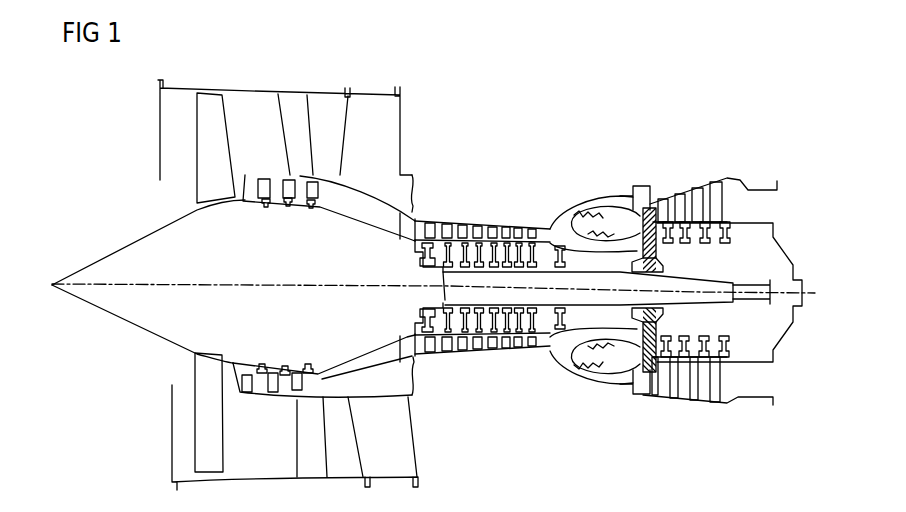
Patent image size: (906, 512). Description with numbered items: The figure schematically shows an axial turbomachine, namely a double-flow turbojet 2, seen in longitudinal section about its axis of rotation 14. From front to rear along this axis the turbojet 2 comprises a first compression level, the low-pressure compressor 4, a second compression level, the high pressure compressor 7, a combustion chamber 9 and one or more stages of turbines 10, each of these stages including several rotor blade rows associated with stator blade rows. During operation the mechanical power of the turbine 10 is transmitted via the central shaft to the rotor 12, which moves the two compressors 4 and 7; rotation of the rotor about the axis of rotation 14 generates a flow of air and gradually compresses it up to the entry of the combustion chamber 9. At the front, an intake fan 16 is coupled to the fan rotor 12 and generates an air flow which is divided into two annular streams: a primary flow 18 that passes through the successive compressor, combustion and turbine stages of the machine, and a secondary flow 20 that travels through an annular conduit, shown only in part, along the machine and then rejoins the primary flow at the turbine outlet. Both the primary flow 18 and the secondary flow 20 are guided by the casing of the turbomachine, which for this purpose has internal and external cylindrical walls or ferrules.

The turbojet 2 is at (590, 116).
The low-pressure compressor 4 is at (262, 208).
The high pressure compressor 7 is at (451, 226).
The combustion chamber 9 is at (575, 228).
The turbines 10 is at (706, 188).
The rotor 12 is at (129, 308).
The axis of rotation 14 is at (289, 291).
The intake fan 16 is at (213, 148).
The primary flow 18 is at (334, 192).
The secondary flow 20 is at (398, 126).